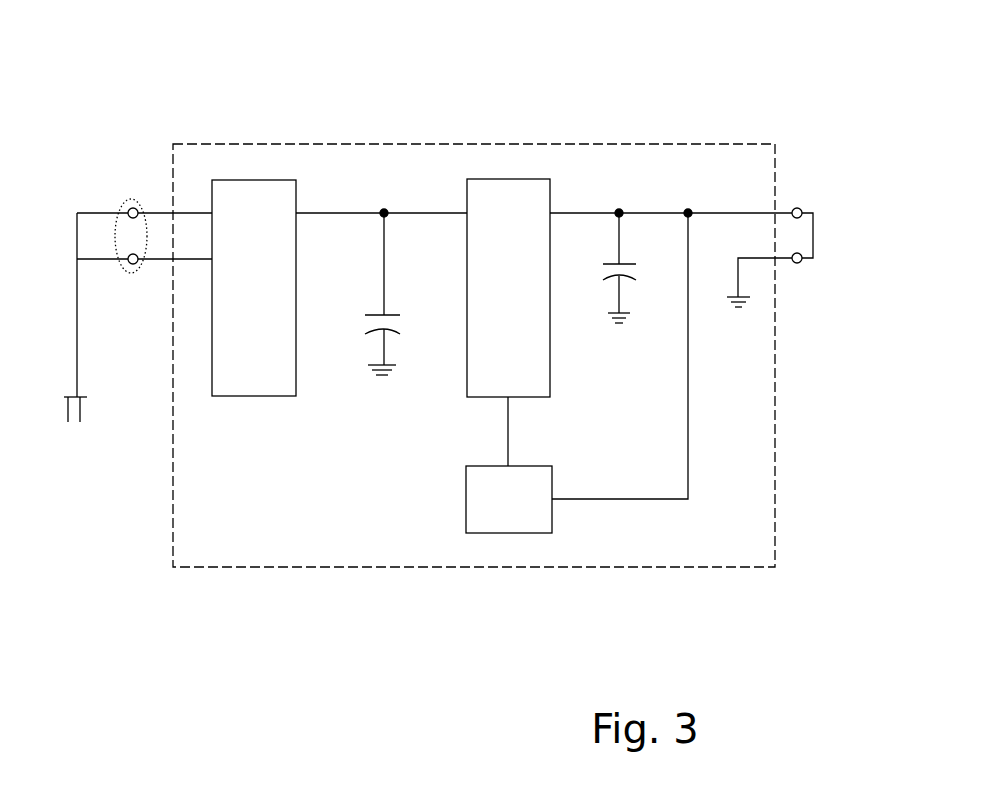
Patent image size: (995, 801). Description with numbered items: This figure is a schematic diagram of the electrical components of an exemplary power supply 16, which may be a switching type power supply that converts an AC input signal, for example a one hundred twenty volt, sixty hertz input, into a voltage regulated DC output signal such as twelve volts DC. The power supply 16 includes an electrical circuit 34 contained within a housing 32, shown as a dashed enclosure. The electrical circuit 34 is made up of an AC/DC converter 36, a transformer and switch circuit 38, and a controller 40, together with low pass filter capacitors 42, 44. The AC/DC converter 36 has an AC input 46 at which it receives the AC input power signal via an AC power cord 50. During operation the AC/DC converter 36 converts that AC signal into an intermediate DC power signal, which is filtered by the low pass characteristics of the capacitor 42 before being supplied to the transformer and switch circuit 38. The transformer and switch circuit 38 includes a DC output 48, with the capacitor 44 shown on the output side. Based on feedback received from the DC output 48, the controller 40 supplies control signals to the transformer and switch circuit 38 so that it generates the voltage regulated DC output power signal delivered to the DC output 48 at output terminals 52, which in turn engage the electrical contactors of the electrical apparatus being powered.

The power supply 16 is at (709, 56).
The housing 32 is at (480, 144).
The electrical circuit 34 is at (337, 173).
The AC/DC converter 36 is at (240, 296).
The transformer and switch circuit 38 is at (521, 291).
The controller 40 is at (496, 520).
The low pass filter capacitor 42 is at (372, 331).
The low pass filter capacitor 44 is at (608, 282).
The AC input 46 is at (128, 202).
The DC output 48 is at (833, 216).
The AC power cord 50 is at (77, 298).
The output terminals 52 is at (813, 233).